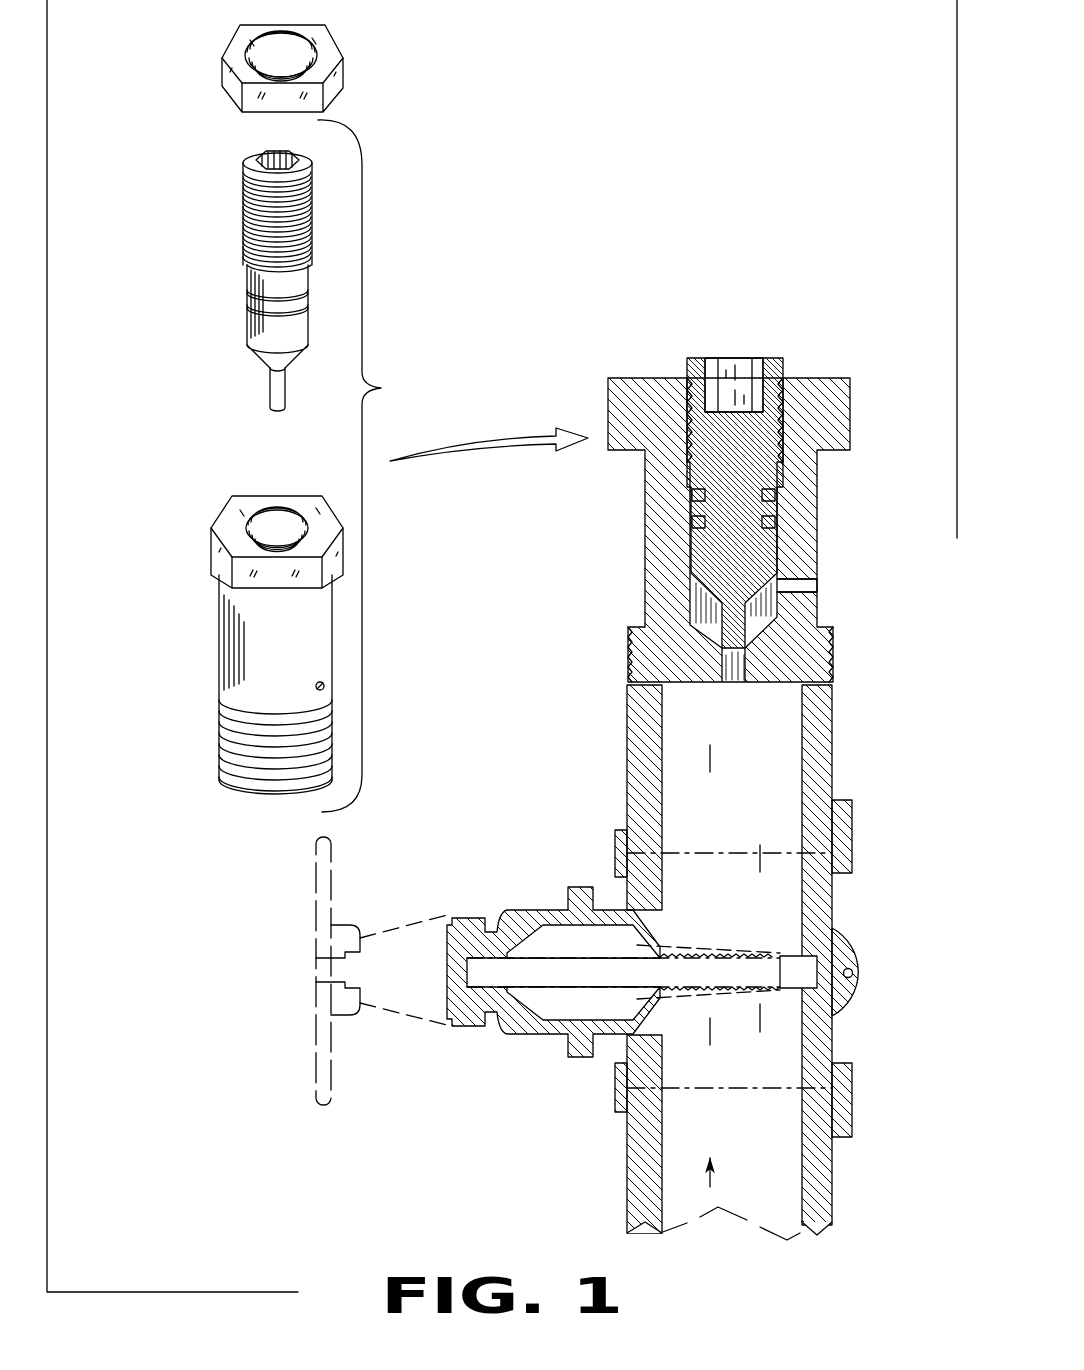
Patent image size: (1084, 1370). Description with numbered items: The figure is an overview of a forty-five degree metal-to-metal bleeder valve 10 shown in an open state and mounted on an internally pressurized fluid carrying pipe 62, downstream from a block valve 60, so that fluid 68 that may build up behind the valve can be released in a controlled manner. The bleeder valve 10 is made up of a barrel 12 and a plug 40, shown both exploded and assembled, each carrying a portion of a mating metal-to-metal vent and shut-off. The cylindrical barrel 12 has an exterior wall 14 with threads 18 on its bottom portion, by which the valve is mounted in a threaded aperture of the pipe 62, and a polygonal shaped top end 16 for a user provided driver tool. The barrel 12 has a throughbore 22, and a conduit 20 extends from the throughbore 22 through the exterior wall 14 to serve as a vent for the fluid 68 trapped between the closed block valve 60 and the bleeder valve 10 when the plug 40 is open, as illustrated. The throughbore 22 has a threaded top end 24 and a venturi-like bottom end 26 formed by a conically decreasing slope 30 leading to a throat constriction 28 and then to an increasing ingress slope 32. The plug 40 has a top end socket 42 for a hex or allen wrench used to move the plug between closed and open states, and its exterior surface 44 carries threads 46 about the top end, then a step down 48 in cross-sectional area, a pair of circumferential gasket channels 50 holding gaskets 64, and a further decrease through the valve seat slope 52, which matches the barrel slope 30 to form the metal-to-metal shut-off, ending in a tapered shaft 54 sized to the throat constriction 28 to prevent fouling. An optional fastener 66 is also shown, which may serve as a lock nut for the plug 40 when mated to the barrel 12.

The bleeder valve 10 is at (399, 163).
The barrel 12 is at (514, 539).
The exterior wall 14 is at (222, 672).
The polygonal shaped top end 16 is at (212, 538).
The threads 18 is at (222, 755).
The conduit 20 is at (324, 685).
The throughbore 22 is at (253, 493).
The threaded top end 24 is at (297, 520).
The venturi-like bottom end 26 is at (748, 694).
The throat constriction 28 is at (768, 672).
The conically decreasing slope 30 is at (780, 648).
The increasing ingress slope 32 is at (752, 682).
The plug 40 is at (504, 385).
The top end socket 42 is at (271, 178).
The exterior surface 44 is at (300, 336).
The threads 46 is at (308, 240).
The step down 48 is at (304, 290).
The circumferential gasket channels 50 is at (252, 283).
The valve seat slope 52 is at (268, 356).
The tapered shaft 54 is at (271, 390).
The block valve 60 is at (323, 1082).
The pipe 62 is at (633, 1205).
The gaskets 64 is at (282, 312).
The fastener 66 is at (237, 57).
The fluid 68 is at (795, 583).